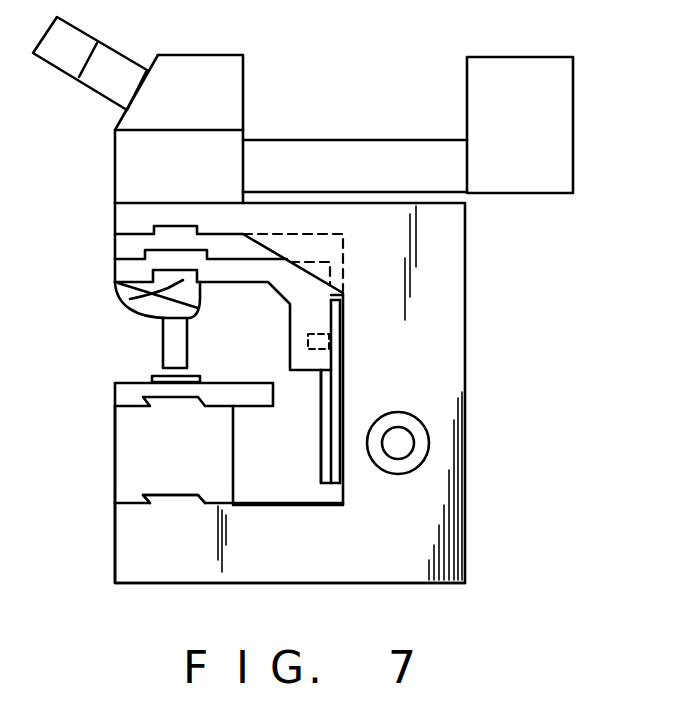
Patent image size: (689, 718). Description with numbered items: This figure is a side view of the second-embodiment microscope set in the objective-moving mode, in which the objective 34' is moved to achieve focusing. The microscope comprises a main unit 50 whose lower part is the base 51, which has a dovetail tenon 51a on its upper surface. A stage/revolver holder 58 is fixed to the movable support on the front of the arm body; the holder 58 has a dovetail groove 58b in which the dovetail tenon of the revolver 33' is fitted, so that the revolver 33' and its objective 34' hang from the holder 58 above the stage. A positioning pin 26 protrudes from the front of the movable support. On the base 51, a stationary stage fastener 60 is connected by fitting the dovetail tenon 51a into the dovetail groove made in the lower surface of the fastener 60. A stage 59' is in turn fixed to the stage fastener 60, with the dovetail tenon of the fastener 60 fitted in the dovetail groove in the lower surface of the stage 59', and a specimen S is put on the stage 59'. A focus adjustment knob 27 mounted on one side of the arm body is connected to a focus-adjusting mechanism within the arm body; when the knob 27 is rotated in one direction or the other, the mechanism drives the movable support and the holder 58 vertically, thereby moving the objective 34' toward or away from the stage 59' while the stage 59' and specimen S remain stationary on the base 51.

The main unit 50 is at (440, 260).
The dovetail groove 58b is at (200, 292).
The stage/revolver holder 58 is at (308, 343).
The positioning pin 26 is at (320, 353).
The revolver 33' is at (115, 294).
The objective 34' is at (121, 340).
The specimen S is at (162, 380).
The stage 59' is at (156, 400).
The stationary stage fastener 60 is at (140, 450).
The base 51 is at (125, 543).
The dovetail tenon 51a is at (178, 497).
The focus adjustment knob 27 is at (405, 443).